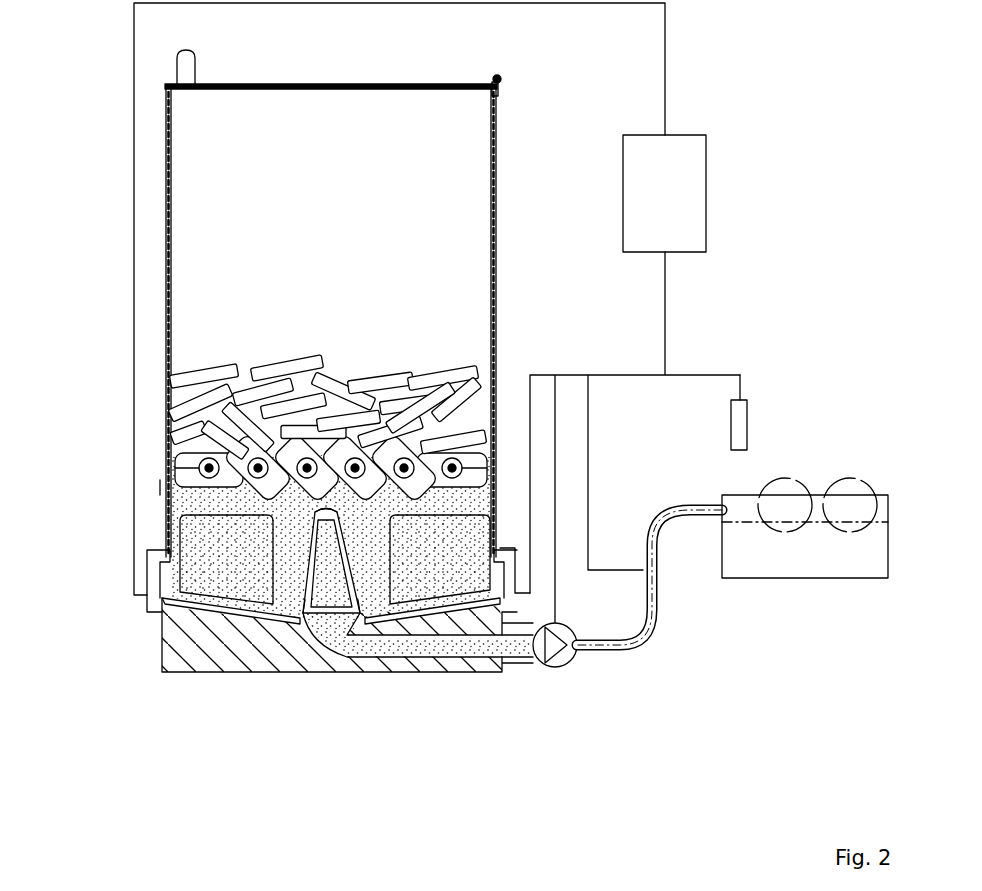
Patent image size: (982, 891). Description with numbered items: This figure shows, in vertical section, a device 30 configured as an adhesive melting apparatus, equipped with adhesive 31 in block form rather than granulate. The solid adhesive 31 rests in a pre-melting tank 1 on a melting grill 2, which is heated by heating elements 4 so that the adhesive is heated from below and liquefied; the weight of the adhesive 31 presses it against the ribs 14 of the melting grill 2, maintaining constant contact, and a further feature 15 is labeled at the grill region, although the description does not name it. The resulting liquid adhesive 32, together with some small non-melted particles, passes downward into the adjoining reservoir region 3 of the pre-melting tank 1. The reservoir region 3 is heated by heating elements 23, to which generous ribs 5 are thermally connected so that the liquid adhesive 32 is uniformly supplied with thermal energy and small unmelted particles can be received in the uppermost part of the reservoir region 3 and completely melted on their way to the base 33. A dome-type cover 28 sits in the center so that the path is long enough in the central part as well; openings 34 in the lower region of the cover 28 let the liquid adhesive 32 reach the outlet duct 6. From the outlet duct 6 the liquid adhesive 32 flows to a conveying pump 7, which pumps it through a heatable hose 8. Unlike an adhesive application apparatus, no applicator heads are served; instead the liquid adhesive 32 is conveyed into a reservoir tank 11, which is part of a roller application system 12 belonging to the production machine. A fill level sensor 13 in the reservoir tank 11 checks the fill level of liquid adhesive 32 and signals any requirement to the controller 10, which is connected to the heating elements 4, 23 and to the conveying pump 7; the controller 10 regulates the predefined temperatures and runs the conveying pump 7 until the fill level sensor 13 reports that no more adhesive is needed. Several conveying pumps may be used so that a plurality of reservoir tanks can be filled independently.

The pre-melting tank 1 is at (167, 223).
The melting grill 2 is at (180, 433).
The reservoir region 3 is at (160, 487).
The heating elements 4 is at (187, 437).
The ribs 5 is at (255, 570).
The outlet duct 6 is at (513, 653).
The conveying pump 7 is at (568, 665).
The heatable hose 8 is at (648, 625).
The controller 10 is at (667, 185).
The reservoir tank 11 is at (748, 547).
The roller application system 12 is at (815, 477).
The fill level sensor 13 is at (738, 417).
The ribs of the melting grill 14 is at (170, 468).
The drive shaft 15 is at (427, 427).
The heating elements 23 is at (188, 603).
The dome-type cover 28 is at (330, 510).
The device 30 is at (137, 713).
The adhesive 31 is at (247, 363).
The liquid adhesive 32 is at (203, 505).
The base 33 is at (428, 595).
The openings 34 is at (335, 592).